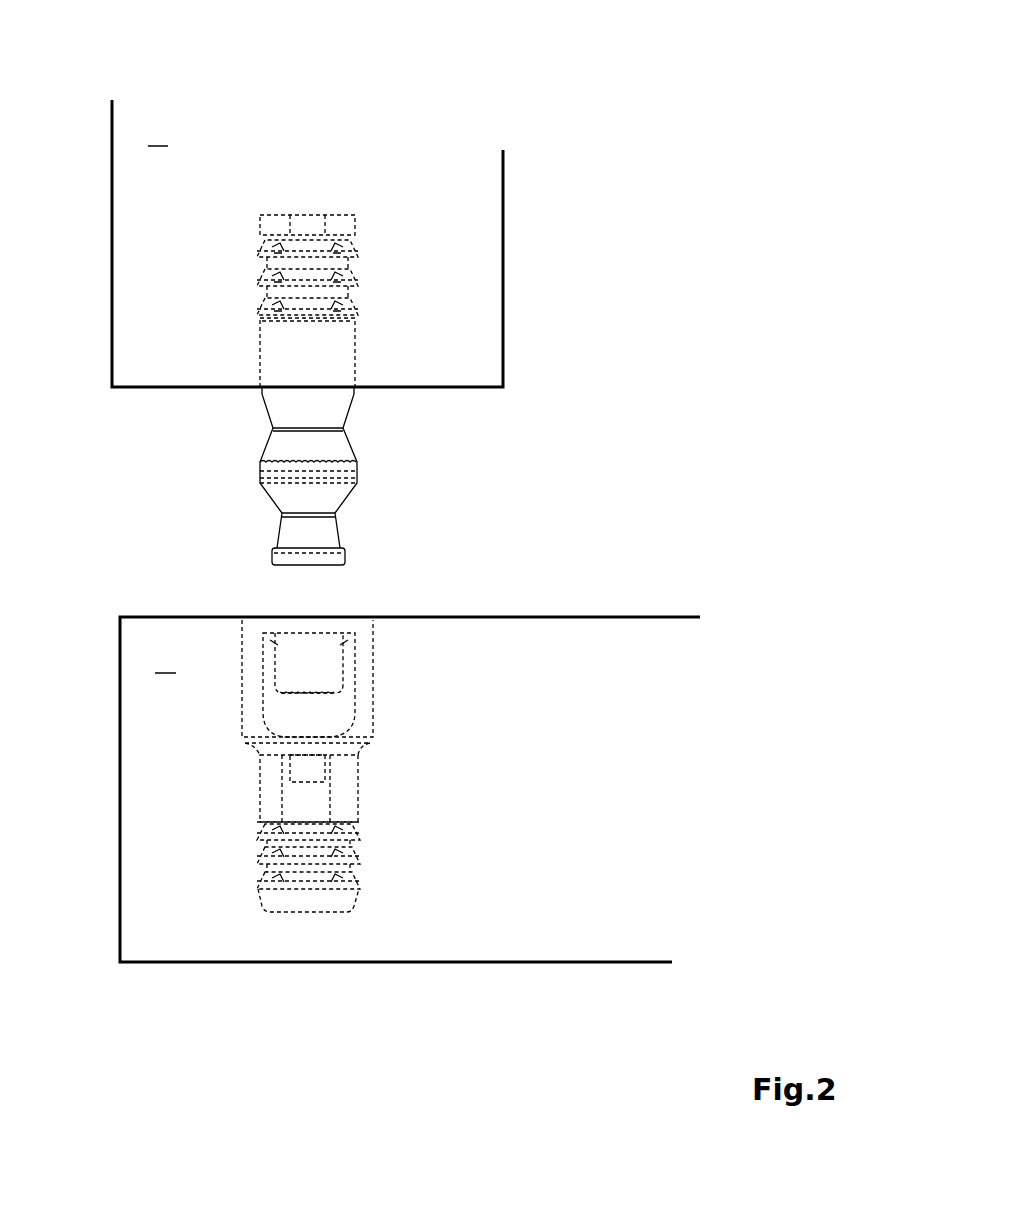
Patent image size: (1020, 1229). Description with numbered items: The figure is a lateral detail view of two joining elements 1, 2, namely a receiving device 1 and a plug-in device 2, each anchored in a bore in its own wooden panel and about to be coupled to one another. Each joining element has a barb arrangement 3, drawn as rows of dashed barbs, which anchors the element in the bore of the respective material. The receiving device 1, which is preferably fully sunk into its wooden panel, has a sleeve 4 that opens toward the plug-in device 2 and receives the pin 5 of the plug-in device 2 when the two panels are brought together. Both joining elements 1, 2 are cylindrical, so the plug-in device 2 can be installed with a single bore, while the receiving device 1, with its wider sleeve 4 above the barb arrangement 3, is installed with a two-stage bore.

The receiving device 1 is at (177, 570).
The plug-in device 2 is at (182, 425).
The barb arrangement 3 is at (322, 262).
The sleeve 4 is at (318, 705).
The pin 5 is at (328, 437).